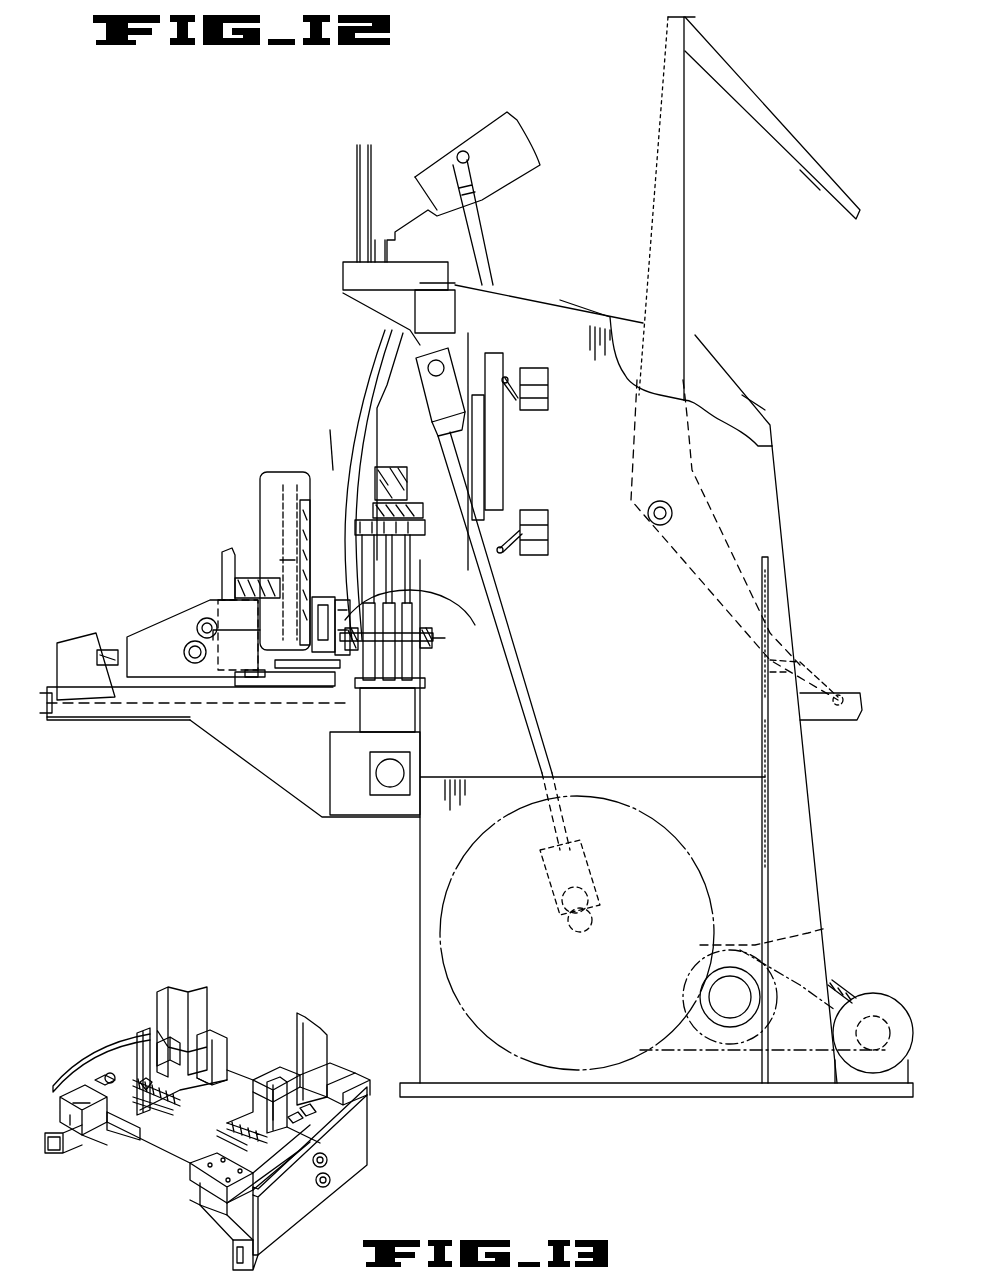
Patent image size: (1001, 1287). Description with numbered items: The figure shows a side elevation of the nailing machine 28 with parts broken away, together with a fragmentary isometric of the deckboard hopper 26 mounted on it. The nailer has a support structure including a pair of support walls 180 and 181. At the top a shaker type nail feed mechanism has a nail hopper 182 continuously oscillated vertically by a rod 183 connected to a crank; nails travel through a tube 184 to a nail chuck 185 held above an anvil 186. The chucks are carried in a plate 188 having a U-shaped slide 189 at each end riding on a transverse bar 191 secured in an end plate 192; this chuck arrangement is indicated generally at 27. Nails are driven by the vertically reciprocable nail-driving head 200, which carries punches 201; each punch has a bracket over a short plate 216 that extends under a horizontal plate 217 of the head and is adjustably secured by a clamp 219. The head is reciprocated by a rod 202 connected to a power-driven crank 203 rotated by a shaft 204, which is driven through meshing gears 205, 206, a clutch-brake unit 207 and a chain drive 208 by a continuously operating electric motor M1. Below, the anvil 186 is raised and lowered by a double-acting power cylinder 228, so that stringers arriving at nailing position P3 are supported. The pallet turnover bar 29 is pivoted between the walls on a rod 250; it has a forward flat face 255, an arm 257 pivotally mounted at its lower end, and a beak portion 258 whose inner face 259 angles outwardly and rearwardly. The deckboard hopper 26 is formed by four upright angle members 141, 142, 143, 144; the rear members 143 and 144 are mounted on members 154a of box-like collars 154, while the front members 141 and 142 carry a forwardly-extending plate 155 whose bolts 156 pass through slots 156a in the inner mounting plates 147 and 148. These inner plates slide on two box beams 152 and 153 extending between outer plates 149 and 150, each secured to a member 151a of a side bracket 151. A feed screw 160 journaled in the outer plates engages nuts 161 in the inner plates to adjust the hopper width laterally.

In FIG. 12, the pallet turnover bar 29 is at (712, 28).
In FIG. 12, the beak portion 258 is at (750, 88).
In FIG. 12, the inner face 259 is at (795, 163).
In FIG. 12, the forward flat face 255 is at (688, 234).
In FIG. 12, the nail hopper 182 is at (520, 152).
In FIG. 12, the rod 183 is at (480, 230).
In FIG. 12, the nailing machine 28 is at (715, 346).
In FIG. 12, the support wall 181 is at (745, 412).
In FIG. 12, the support wall 180 is at (768, 457).
In FIG. 12, the rod 250 is at (670, 507).
In FIG. 12, the arm 257 is at (813, 692).
In FIG. 12, the tube 184 is at (366, 377).
In FIG. 12, the nail-driving head 200 is at (378, 404).
In FIG. 12, the nailing position P3 is at (333, 479).
In FIG. 12, the deckboard hopper 26 is at (249, 483).
In FIG. 13, the deckboard hopper 26 is at (196, 972).
In FIG. 12, the angle member 144 is at (260, 499).
In FIG. 13, the angle member 144 is at (322, 1032).
In FIG. 12, the angle member 142 is at (222, 550).
In FIG. 13, the angle member 142 is at (265, 1110).
In FIG. 12, the forwardly-extending plate 155 is at (232, 594).
In FIG. 13, the forwardly-extending plate 155 is at (185, 1104).
In FIG. 12, the mounting plate 148 is at (150, 624).
In FIG. 13, the mounting plate 148 is at (272, 1180).
In FIG. 12, the feed screw 160 is at (198, 622).
In FIG. 13, the feed screw 160 is at (215, 1110).
In FIG. 12, the box-like collar 154 is at (100, 642).
In FIG. 13, the box-like collar 154 is at (80, 1092).
In FIG. 12, the clamp 219 is at (330, 576).
In FIG. 12, the horizontal plate 217 is at (400, 517).
In FIG. 12, the punch 201 is at (395, 532).
In FIG. 12, the short plate 216 is at (478, 507).
In FIG. 12, the actuator 27 is at (432, 607).
In FIG. 12, the plate 188 is at (400, 630).
In FIG. 12, the U-shaped slide 189 is at (412, 639).
In FIG. 12, the end plate 192 is at (450, 647).
In FIG. 12, the transverse bar 191 is at (408, 667).
In FIG. 12, the nail chuck 185 is at (398, 678).
In FIG. 12, the anvil 186 is at (410, 726).
In FIG. 12, the box beam 153 is at (312, 690).
In FIG. 13, the box beam 153 is at (278, 1068).
In FIG. 12, the collar member 154a is at (318, 674).
In FIG. 13, the collar member 154a is at (205, 1040).
In FIG. 12, the slot 156a is at (255, 692).
In FIG. 13, the slot 156a is at (318, 1112).
In FIG. 12, the side bracket 151 is at (300, 792).
In FIG. 12, the double-acting power cylinder 228 is at (384, 787).
In FIG. 12, the rod 202 is at (535, 740).
In FIG. 12, the box beam 152 is at (98, 660).
In FIG. 13, the box beam 152 is at (190, 1178).
In FIG. 12, the nut 161 is at (184, 648).
In FIG. 13, the nut 161 is at (118, 1072).
In FIG. 12, the bolt 156 is at (244, 635).
In FIG. 13, the bolt 156 is at (182, 1055).
In FIG. 12, the outer plate 150 is at (72, 714).
In FIG. 13, the outer plate 150 is at (296, 1226).
In FIG. 12, the outer plate 149 is at (140, 714).
In FIG. 13, the outer plate 149 is at (75, 1148).
In FIG. 12, the side bracket member 151a is at (100, 742).
In FIG. 13, the side bracket member 151a is at (48, 1160).
In FIG. 12, the power-driven crank 203 is at (588, 892).
In FIG. 12, the shaft 204 is at (600, 922).
In FIG. 12, the gear 205 is at (698, 880).
In FIG. 12, the gear 206 is at (705, 1037).
In FIG. 12, the clutch-brake unit 207 is at (826, 932).
In FIG. 12, the chain drive 208 is at (841, 983).
In FIG. 12, the electric motor M1 is at (850, 1068).
In FIG. 13, the angle member 143 is at (160, 992).
In FIG. 13, the angle member 141 is at (138, 1037).
In FIG. 13, the mounting plate 147 is at (95, 1075).